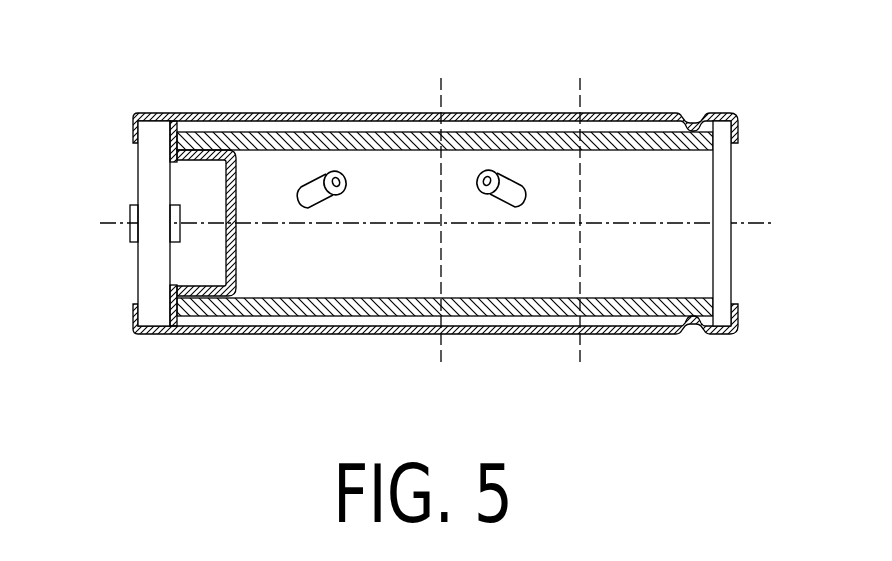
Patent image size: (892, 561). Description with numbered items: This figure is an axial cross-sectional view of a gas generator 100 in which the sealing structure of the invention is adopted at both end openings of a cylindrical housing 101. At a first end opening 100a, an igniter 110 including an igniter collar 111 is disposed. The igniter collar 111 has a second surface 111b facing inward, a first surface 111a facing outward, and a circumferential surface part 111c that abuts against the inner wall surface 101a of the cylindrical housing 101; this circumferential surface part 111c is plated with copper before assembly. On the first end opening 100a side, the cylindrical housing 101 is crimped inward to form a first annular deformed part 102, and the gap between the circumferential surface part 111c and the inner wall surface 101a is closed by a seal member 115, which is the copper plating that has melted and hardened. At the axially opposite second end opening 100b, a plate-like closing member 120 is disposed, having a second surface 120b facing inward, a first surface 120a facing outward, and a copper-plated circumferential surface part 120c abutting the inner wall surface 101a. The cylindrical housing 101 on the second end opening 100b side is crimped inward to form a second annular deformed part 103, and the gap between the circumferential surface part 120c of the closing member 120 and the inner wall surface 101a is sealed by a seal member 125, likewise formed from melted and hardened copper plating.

The gas generator 100 is at (375, 103).
The first end opening 100a is at (137, 147).
The second end opening 100b is at (738, 307).
The cylindrical housing 101 is at (435, 231).
The inner wall surface 101a is at (278, 323).
The first annular deformed part 102 is at (133, 128).
The second annular deformed part 103 is at (740, 136).
The igniter 110 is at (181, 211).
The igniter collar 111 is at (123, 257).
The first surface 111a is at (136, 298).
The second surface 111b is at (175, 275).
The circumferential surface part 111c is at (131, 237).
The seal member 115 is at (150, 333).
The closing member 120 is at (719, 223).
The first surface 120a is at (733, 195).
The second surface 120b is at (713, 186).
The circumferential surface part 120c is at (665, 274).
The seal member 125 is at (722, 331).